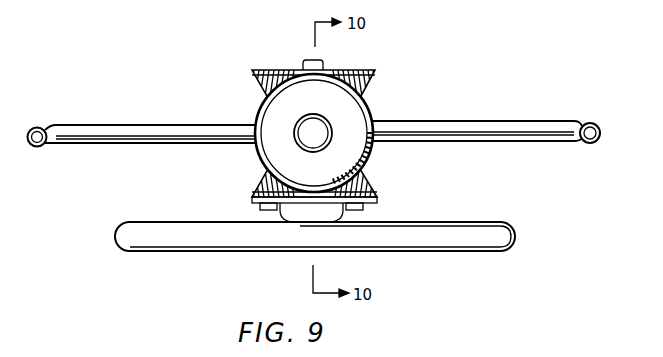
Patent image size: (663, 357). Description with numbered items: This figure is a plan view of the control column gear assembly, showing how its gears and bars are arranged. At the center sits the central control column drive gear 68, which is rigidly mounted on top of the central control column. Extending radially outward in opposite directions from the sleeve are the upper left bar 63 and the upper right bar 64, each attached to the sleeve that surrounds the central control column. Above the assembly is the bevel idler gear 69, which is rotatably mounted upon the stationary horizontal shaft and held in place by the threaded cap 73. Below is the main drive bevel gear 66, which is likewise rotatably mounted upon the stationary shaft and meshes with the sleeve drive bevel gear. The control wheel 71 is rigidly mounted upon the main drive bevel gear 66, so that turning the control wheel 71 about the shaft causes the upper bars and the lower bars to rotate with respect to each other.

The upper left bar 63 is at (66, 124).
The upper right bar 64 is at (522, 120).
The main drive bevel gear 66 is at (377, 187).
The central control column drive gear 68 is at (323, 175).
The bevel idler gear 69 is at (347, 71).
The control wheel 71 is at (454, 222).
The threaded cap 73 is at (309, 61).